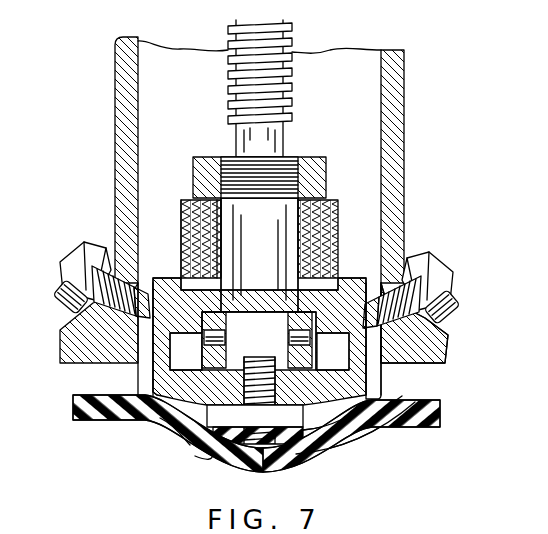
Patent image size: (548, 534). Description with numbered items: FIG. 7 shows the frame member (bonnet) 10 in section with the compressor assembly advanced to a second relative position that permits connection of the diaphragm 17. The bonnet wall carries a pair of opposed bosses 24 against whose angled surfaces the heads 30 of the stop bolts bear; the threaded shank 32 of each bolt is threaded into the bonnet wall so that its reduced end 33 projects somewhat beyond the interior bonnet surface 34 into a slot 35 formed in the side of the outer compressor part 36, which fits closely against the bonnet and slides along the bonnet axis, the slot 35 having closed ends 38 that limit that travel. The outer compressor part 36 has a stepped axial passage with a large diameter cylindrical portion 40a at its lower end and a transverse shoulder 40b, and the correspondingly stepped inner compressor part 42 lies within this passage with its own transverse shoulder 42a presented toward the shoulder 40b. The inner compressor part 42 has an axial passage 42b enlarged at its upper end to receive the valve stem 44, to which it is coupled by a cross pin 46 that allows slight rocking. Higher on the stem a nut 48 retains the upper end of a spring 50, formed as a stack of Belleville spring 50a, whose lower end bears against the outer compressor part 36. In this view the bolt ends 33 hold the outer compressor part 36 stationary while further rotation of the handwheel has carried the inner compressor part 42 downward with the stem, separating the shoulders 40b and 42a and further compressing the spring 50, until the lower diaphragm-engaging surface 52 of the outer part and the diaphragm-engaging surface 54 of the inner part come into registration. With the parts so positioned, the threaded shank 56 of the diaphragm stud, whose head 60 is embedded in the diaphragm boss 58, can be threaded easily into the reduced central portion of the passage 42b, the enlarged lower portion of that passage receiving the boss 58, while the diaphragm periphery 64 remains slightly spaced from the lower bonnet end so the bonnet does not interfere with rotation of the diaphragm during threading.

The frame member (bonnet) 10 is at (421, 164).
The diaphragm 17 is at (212, 477).
The bosses 24 is at (407, 322).
The heads 30 is at (270, 266).
The threaded shank 32 is at (116, 245).
The reduced end 33 is at (120, 318).
The interior bonnet surface 34 is at (377, 133).
The slot 35 is at (150, 377).
The outer compressor part 36 is at (352, 288).
The closed ends 38 is at (107, 311).
The large diameter cylindrical portion 40a is at (256, 433).
The transverse shoulder 40b is at (380, 274).
The inner compressor part 42 is at (354, 449).
The transverse shoulder 42a is at (345, 348).
The axial passage 42b is at (183, 437).
The valve stem 44 is at (283, 143).
The cross pin 46 is at (221, 305).
The nut 48 is at (318, 158).
The spring 50 is at (372, 163).
The Belleville spring 50a is at (181, 205).
The diaphragm-engaging surface 52 is at (370, 438).
The diaphragm-engaging surface 54 is at (330, 462).
The threaded shank 56 is at (200, 470).
The diaphragm boss 58 is at (290, 458).
The head 60 is at (250, 457).
The diaphragm periphery 64 is at (442, 420).